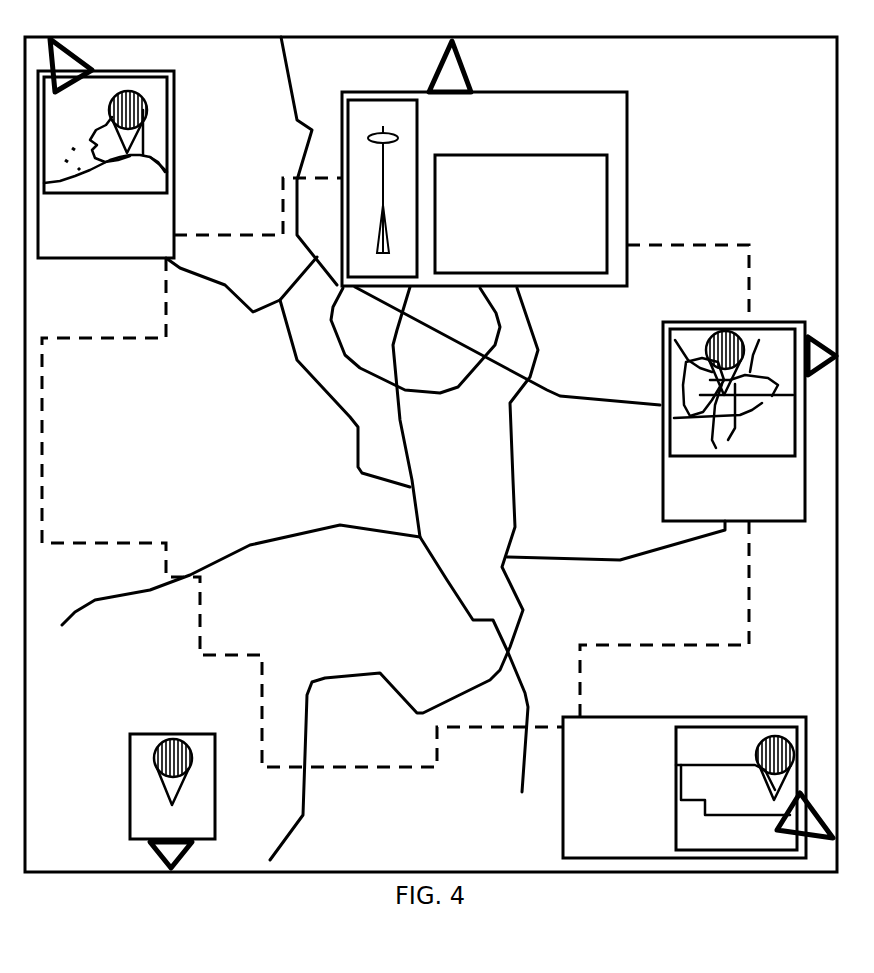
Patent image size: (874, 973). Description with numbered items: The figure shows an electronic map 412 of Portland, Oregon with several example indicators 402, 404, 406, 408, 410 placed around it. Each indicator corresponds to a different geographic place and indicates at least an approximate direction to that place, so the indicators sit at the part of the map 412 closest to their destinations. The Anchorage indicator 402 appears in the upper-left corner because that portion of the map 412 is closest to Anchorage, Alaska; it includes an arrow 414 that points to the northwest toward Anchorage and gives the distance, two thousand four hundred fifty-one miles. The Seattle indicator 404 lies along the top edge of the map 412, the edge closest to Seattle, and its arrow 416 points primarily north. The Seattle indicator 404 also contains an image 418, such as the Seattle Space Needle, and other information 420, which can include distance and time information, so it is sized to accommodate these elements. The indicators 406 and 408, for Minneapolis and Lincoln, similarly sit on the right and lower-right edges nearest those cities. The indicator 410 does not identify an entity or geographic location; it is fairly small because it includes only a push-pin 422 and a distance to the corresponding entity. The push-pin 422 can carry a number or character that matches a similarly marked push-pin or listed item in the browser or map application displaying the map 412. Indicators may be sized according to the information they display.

The Anchorage indicator 402 is at (175, 144).
The Seattle indicator 404 is at (629, 159).
The indicator 406 is at (663, 361).
The indicator 408 is at (768, 717).
The indicator 410 is at (158, 735).
The electronic map 412 is at (769, 110).
The arrow 414 is at (77, 58).
The arrow 416 is at (466, 66).
The image 418 is at (419, 137).
The other information 420 is at (521, 214).
The push-pin 422 is at (155, 762).